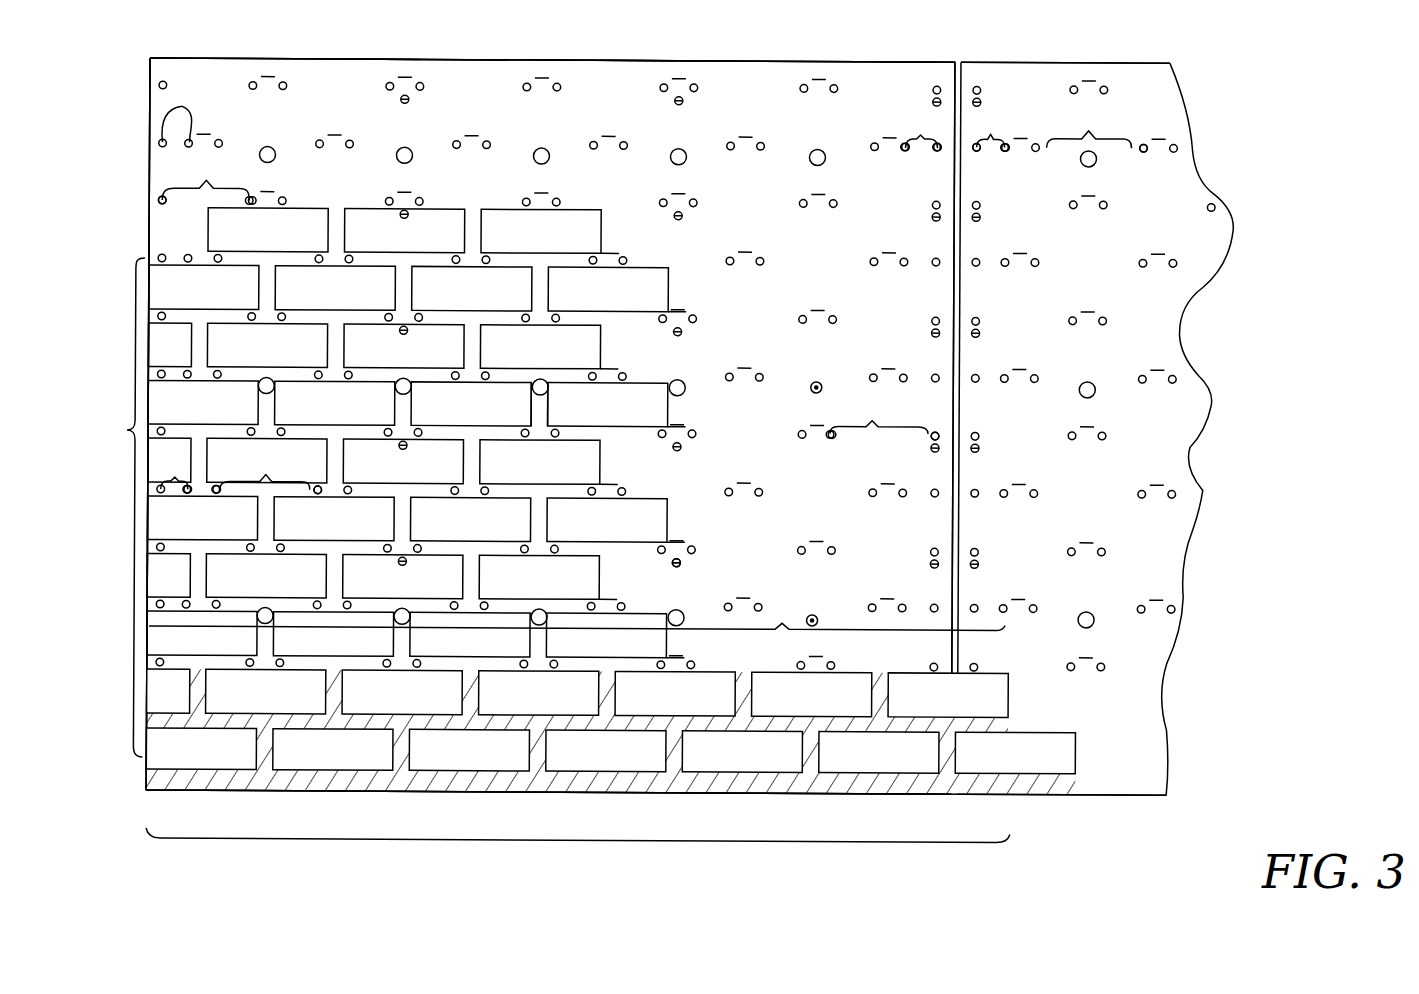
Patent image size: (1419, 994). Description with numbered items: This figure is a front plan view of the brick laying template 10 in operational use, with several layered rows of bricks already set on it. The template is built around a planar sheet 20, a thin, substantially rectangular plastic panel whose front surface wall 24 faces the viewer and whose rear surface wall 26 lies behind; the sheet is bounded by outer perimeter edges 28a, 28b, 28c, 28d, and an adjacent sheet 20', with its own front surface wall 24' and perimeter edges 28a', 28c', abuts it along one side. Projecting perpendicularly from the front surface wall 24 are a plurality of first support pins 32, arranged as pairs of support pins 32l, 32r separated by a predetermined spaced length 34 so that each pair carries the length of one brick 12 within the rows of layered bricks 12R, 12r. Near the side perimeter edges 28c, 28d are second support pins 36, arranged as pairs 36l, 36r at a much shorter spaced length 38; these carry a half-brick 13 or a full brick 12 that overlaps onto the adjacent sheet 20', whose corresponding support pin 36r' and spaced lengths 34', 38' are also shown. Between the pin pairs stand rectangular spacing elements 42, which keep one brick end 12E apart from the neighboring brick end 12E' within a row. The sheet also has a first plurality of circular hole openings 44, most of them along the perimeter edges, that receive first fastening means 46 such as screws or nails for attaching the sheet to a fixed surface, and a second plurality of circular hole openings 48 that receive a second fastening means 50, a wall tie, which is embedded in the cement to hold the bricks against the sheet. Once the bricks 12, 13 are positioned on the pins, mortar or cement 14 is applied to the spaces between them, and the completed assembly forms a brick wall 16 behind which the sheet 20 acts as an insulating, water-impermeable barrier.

The brick laying template 10 is at (158, 31).
The brick 12 is at (448, 420).
The brick end 12E is at (504, 404).
The brick end 12E' is at (587, 405).
The row of layered bricks 12r is at (577, 610).
The horizontal row of layered bricks 12R is at (578, 854).
The half-brick 13 is at (175, 678).
The mortar, grout or cement 14 is at (333, 682).
The brick wall 16 is at (118, 507).
The planar sheet 20 is at (522, 426).
The adjacent planar sheet 20' is at (1063, 405).
The front surface wall 24 is at (669, 48).
The front surface wall of adjacent sheet 24' is at (1176, 411).
The rear surface wall 26 is at (355, 75).
The outer perimeter edge 28a is at (552, 44).
The outer perimeter edge of adjacent sheet 28a' is at (1065, 45).
The outer perimeter edge 28b is at (689, 790).
The side perimeter edge 28c is at (110, 424).
The side perimeter edge of adjacent sheet 28c' is at (990, 367).
The side perimeter edge 28d is at (955, 348).
The first support pin 32 is at (627, 142).
The left first support pin 32l is at (170, 196).
The right first support pin 32r is at (252, 198).
The spaced length 34 is at (545, 319).
The spaced length on adjacent sheet 34' is at (1089, 126).
The second support pin 36 is at (937, 261).
The left second support pin 36l is at (906, 146).
The right second support pin 36r is at (553, 339).
The right second support pin of adjacent sheet 36r' is at (1043, 164).
The spaced length 38 is at (549, 293).
The spaced length on adjacent sheet 38' is at (997, 126).
The spacing element 42 is at (478, 138).
The first circular hole opening 44 is at (680, 563).
The first fastening means 46 is at (407, 101).
The second circular hole opening 48 is at (826, 356).
The second fastening means 50 is at (818, 386).